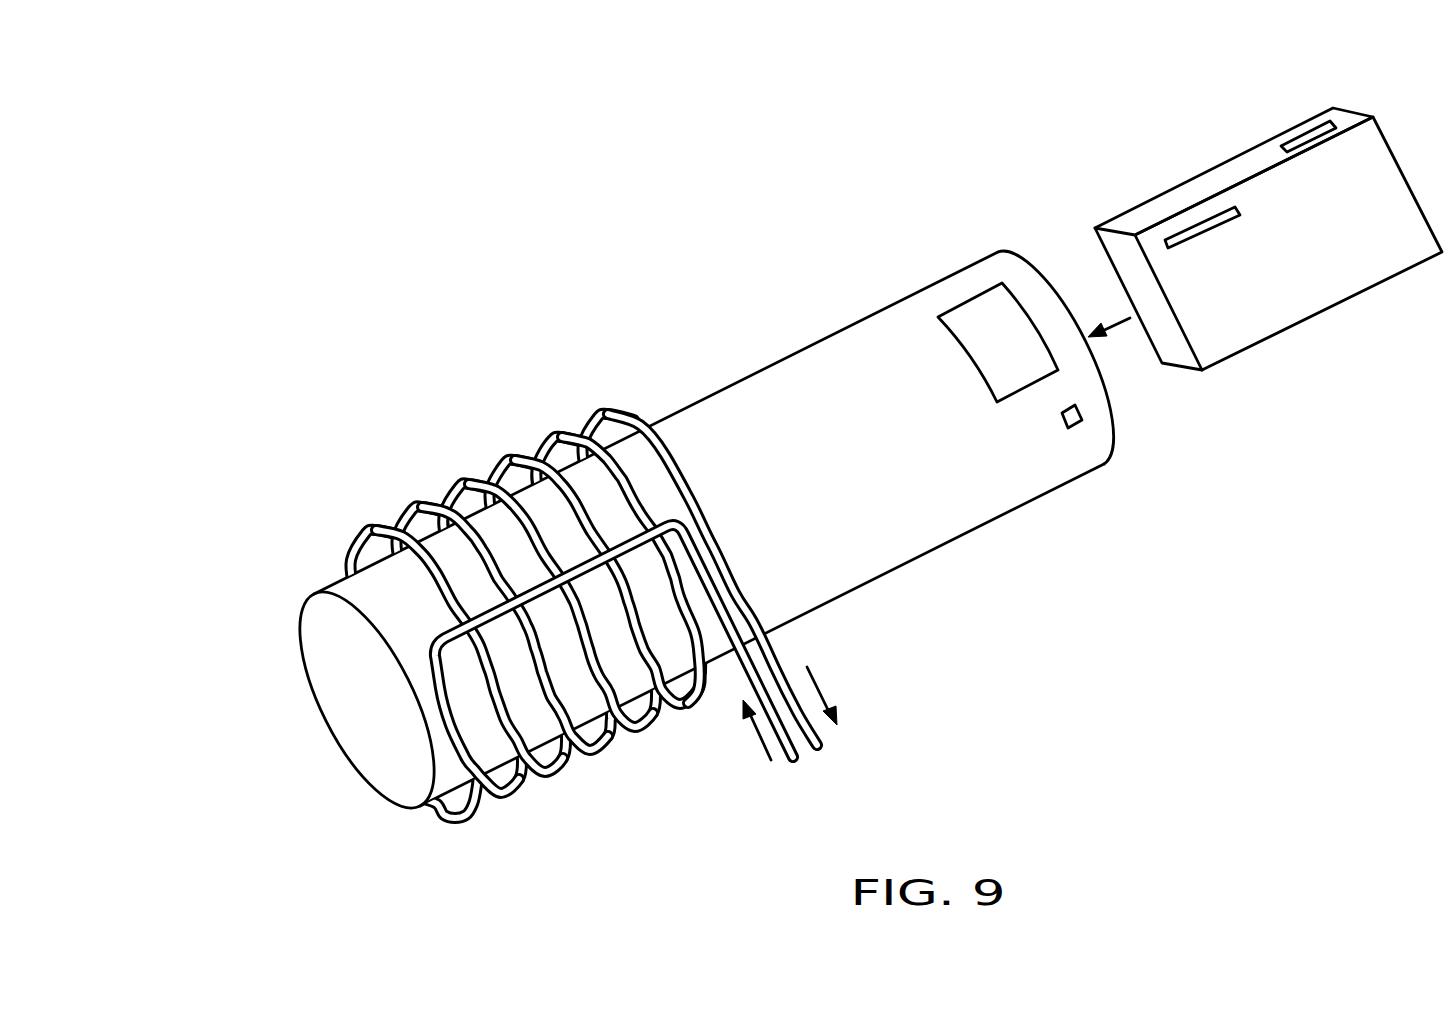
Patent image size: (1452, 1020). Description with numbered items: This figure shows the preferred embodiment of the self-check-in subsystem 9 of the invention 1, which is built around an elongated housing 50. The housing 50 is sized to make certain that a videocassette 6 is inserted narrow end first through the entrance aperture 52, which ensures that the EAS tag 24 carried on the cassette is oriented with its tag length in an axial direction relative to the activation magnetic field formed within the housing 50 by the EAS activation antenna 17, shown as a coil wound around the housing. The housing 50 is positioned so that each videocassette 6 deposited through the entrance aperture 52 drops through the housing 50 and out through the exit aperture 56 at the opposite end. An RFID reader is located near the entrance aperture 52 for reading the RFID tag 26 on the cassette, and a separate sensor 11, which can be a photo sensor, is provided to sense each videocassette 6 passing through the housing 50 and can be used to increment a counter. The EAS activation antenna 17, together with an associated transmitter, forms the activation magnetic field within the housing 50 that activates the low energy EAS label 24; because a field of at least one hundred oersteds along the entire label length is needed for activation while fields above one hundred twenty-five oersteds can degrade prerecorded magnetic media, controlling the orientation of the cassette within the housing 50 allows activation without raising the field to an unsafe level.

The check-in subsystem 9 is at (630, 204).
The embodiment of the present invention 1 is at (992, 305).
The videocassette 6 is at (1333, 201).
The sensor 11 is at (1076, 428).
The EAS activation antenna 17 is at (603, 416).
The EAS tag 24 is at (1306, 137).
The RFID tag 26 is at (1197, 232).
The elongated housing 50 is at (1014, 513).
The entrance aperture 52 is at (1110, 412).
The exit aperture 56 is at (286, 702).